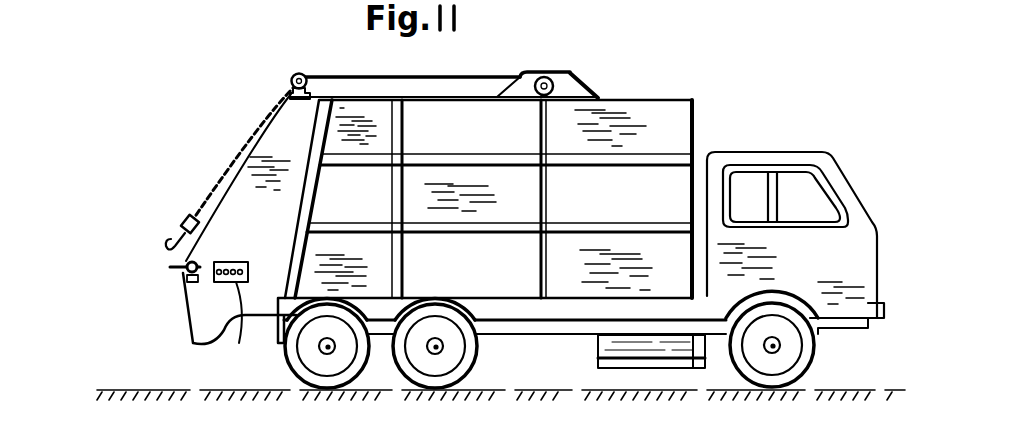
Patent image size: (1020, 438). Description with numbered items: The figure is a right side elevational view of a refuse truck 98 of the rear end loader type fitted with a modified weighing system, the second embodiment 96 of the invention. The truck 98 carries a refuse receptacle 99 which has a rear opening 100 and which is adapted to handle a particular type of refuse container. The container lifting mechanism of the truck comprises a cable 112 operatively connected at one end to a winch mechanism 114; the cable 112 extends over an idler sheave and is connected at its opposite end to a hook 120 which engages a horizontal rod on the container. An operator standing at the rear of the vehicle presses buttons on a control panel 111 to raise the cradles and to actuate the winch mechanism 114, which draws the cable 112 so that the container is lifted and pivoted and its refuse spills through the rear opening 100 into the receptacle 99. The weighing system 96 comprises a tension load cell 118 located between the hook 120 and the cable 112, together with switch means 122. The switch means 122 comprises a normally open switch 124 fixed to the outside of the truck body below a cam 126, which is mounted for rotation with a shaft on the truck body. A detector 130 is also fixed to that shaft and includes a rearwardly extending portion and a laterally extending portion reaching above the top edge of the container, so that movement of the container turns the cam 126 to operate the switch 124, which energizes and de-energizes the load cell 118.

The second embodiment of the invention 96 is at (150, 220).
The refuse truck 98 is at (710, 103).
The refuse receptacle 99 is at (347, 122).
The rear opening 100 is at (222, 150).
The control panel 111 is at (231, 330).
The cable 112 is at (502, 75).
The winch mechanism 114 is at (592, 81).
The tension load cell 118 is at (191, 217).
The hook 120 is at (166, 242).
The switch means 122 is at (191, 320).
The normally open switch 124 is at (182, 280).
The cam 126 is at (198, 260).
The detector 130 is at (160, 297).